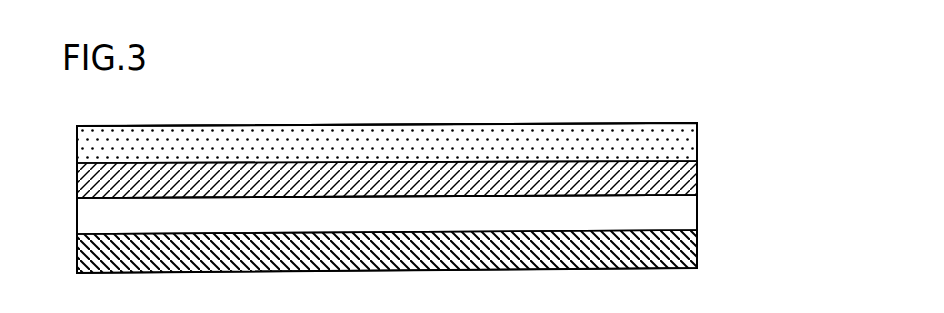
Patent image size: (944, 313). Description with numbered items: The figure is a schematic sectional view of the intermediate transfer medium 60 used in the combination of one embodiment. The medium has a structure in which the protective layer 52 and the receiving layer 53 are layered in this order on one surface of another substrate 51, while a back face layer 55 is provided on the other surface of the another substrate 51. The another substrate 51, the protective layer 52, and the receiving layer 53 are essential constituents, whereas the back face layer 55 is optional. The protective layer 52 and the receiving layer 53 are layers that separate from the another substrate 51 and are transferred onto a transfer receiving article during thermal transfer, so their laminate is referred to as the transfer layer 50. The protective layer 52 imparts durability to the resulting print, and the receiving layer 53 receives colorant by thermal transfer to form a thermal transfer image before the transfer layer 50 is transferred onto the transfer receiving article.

The intermediate transfer medium 60 is at (652, 97).
The transfer layer 50 is at (803, 116).
The receiving layer 53 is at (670, 146).
The protective layer 52 is at (668, 183).
The another substrate 51 is at (670, 218).
The back face layer 55 is at (673, 248).